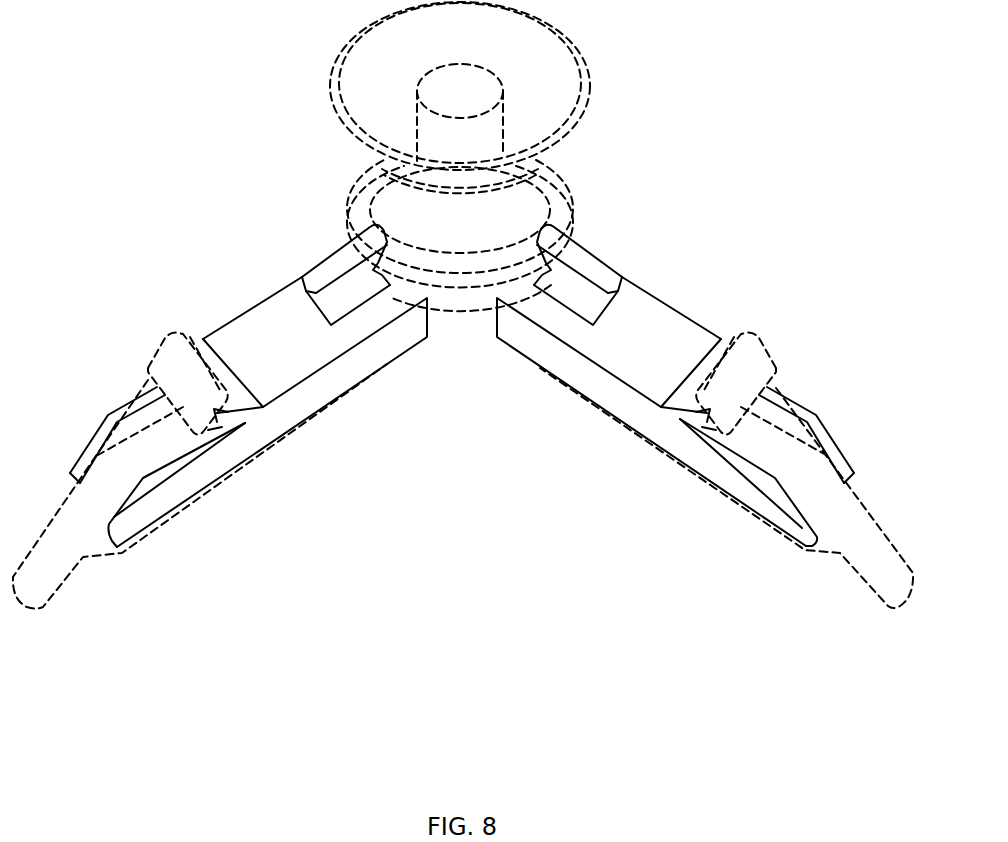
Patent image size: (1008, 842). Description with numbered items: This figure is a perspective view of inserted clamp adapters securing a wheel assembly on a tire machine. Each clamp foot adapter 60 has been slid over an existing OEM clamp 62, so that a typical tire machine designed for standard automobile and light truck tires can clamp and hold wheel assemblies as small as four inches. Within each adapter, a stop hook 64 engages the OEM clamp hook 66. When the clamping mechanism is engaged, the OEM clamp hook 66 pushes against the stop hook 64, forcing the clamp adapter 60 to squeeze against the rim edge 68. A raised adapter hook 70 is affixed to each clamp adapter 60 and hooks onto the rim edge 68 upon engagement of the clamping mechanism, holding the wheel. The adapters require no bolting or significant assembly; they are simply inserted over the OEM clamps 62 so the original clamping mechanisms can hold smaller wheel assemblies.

The clamp foot adapter 60 is at (193, 223).
The OEM clamp 62 is at (195, 505).
The stop hook 64 is at (252, 412).
The OEM clamp hook 66 is at (160, 348).
The rim edge 68 is at (465, 272).
The raised adapter hook 70 is at (339, 249).